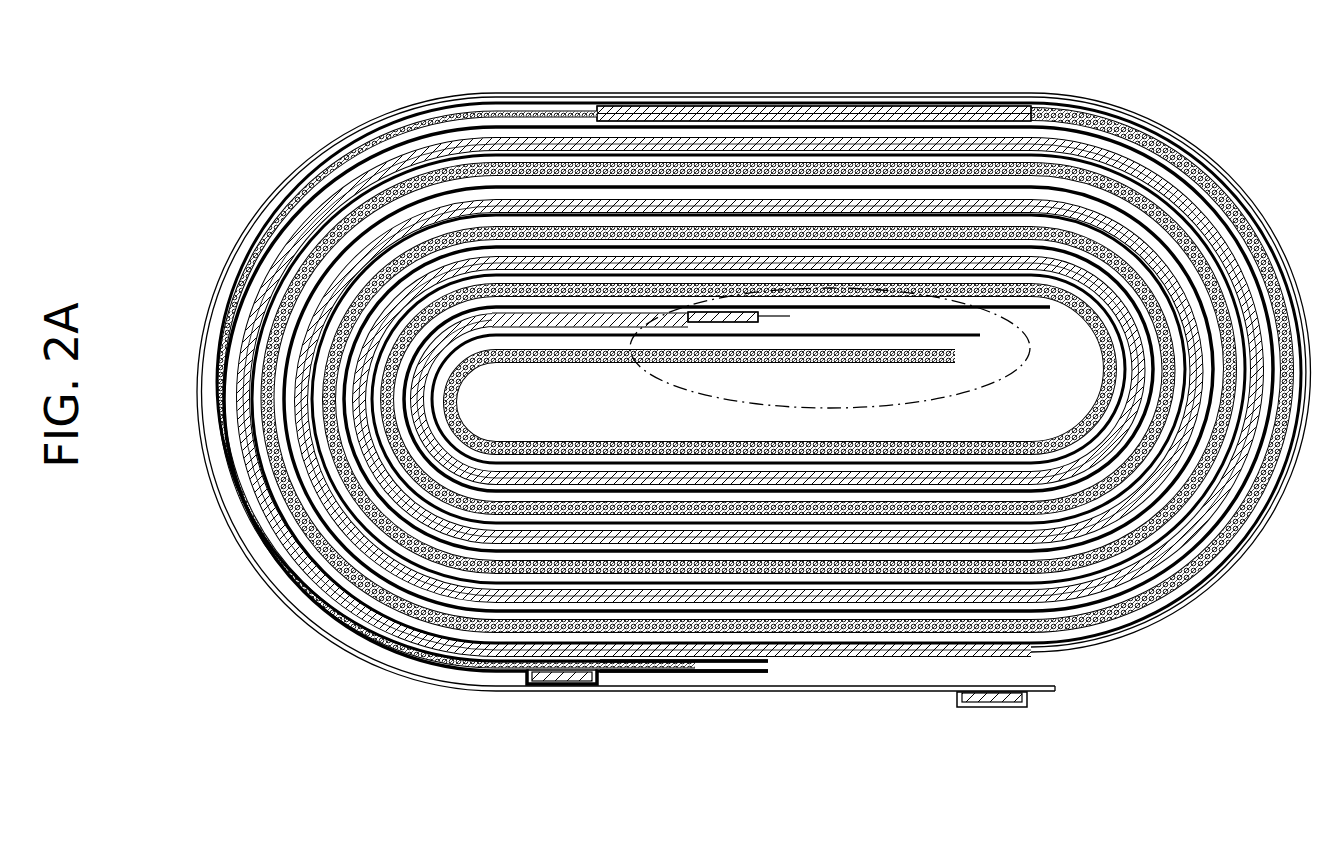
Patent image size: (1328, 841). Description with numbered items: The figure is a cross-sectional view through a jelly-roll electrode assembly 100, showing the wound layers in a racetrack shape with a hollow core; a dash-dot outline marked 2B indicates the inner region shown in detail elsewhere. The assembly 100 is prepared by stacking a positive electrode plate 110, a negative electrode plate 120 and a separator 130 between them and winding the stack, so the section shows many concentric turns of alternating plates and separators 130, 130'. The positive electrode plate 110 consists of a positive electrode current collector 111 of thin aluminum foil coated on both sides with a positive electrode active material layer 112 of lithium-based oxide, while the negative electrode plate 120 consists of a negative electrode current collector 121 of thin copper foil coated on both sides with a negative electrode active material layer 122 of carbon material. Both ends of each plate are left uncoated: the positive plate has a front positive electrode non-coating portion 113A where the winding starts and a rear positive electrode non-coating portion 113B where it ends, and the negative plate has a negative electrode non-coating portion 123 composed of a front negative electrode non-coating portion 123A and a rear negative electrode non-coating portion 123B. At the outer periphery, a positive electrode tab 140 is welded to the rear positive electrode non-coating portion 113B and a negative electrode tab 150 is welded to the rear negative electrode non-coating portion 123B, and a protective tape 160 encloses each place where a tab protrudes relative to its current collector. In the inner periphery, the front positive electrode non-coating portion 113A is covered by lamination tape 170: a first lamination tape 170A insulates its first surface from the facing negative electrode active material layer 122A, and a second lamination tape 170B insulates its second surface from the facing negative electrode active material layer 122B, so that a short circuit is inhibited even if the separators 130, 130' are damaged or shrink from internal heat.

The electrode assembly 100 is at (1160, 95).
The positive electrode plate 110 is at (836, 134).
The positive electrode current collector 111 is at (895, 136).
The positive electrode active material layer 112 is at (960, 130).
The front positive electrode non-coating portion 113A is at (772, 136).
The rear positive electrode non-coating portion 113B is at (689, 136).
The negative electrode plate 120 is at (588, 108).
The negative electrode current collector 121 is at (621, 112).
The negative electrode active material layer 122 is at (684, 119).
The negative electrode active material layer 122A is at (540, 364).
The negative electrode active material layer 122B is at (770, 303).
The negative electrode non-coating portion 123 is at (510, 110).
The front negative electrode non-coating portion 123A is at (945, 364).
The rear negative electrode non-coating portion 123B is at (672, 673).
The separator 130 is at (759, 349).
The separator 130' is at (748, 360).
The positive electrode tab 140 is at (1005, 703).
The negative electrode tab 150 is at (568, 683).
The protective tape 160 is at (529, 682).
The lamination tape 170 is at (660, 412).
The first lamination tape 170A is at (705, 323).
The second lamination tape 170B is at (625, 328).
The section line of FIG. 2B is at (1028, 339).